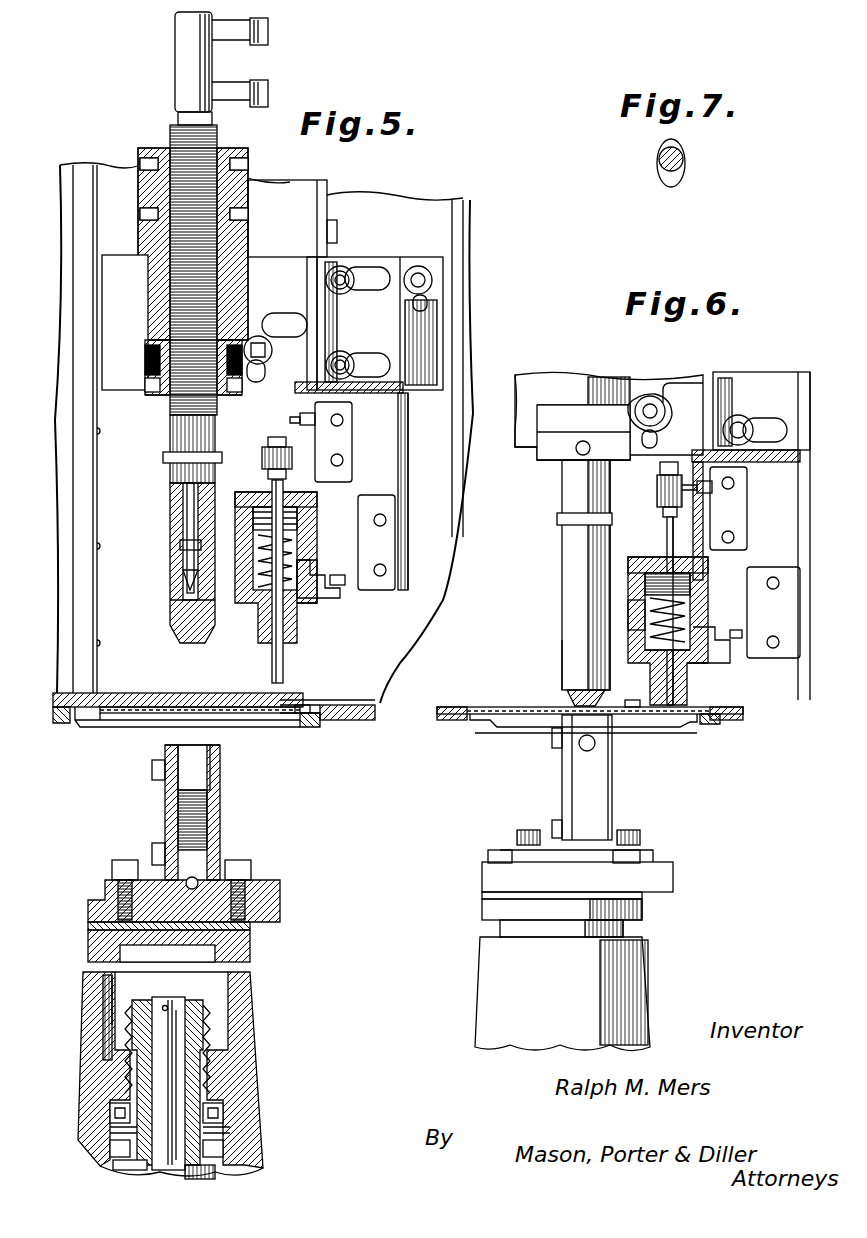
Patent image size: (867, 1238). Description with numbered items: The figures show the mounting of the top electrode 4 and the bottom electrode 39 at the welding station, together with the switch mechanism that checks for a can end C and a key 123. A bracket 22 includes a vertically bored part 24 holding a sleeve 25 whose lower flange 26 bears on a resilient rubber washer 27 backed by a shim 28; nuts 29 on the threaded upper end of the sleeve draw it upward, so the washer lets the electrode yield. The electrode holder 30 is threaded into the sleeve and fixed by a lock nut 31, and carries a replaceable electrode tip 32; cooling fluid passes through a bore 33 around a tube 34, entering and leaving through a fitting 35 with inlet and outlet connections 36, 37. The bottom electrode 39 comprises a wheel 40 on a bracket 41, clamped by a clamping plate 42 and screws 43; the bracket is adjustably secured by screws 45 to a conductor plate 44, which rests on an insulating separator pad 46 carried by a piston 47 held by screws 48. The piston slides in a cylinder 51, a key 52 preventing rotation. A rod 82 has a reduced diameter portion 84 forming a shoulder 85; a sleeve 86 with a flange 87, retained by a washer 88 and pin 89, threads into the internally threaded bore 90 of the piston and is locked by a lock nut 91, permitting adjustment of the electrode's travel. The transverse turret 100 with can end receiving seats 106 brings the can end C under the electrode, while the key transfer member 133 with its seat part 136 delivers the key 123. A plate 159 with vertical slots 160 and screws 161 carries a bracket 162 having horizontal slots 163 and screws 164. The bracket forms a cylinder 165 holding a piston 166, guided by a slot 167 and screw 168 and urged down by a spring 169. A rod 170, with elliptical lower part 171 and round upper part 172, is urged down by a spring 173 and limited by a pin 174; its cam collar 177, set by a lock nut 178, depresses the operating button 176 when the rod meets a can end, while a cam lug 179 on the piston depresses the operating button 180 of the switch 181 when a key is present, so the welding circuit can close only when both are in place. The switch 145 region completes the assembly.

In FIG. 5, the top electrode 4 is at (160, 509).
In FIG. 6, the top electrode 4 is at (552, 612).
In FIG. 5, the bracket 22 is at (115, 395).
In FIG. 6, the bracket 22 is at (527, 442).
In FIG. 5, the vertically bored part 24 is at (245, 265).
In FIG. 6, the vertically bored part 24 is at (550, 385).
In FIG. 5, the sleeve 25 is at (165, 292).
In FIG. 5, the flange 26 is at (165, 385).
In FIG. 6, the flange 26 is at (555, 460).
In FIG. 5, the resilient rubber washer 27 is at (148, 366).
In FIG. 6, the resilient rubber washer 27 is at (555, 420).
In FIG. 5, the shim 28 is at (148, 346).
In FIG. 6, the shim 28 is at (540, 406).
In FIG. 5, the nuts 29 is at (250, 212).
In FIG. 5, the holder 30 is at (175, 470).
In FIG. 6, the holder 30 is at (560, 566).
In FIG. 5, the lock nut 31 is at (165, 155).
In FIG. 5, the replaceable electrode tip 32 is at (172, 608).
In FIG. 6, the replaceable electrode tip 32 is at (575, 668).
In FIG. 5, the bore 33 is at (190, 518).
In FIG. 5, the tube 34 is at (183, 492).
In FIG. 5, the fitting 35 is at (175, 33).
In FIG. 5, the inlet connection 36 is at (268, 33).
In FIG. 5, the outlet connection 37 is at (268, 92).
In FIG. 5, the bottom electrode 39 is at (220, 810).
In FIG. 6, the bottom electrode 39 is at (612, 787).
In FIG. 5, the electrode wheel 40 is at (212, 748).
In FIG. 6, the electrode wheel 40 is at (575, 703).
In FIG. 5, the bracket 41 is at (220, 778).
In FIG. 6, the bracket 41 is at (612, 762).
In FIG. 5, the clamping plate 42 is at (190, 750).
In FIG. 6, the clamping plate 42 is at (567, 779).
In FIG. 5, the screws 43 is at (165, 828).
In FIG. 6, the screws 43 is at (554, 740).
In FIG. 5, the conductor plate 44 is at (282, 912).
In FIG. 6, the conductor plate 44 is at (675, 880).
In FIG. 5, the screws 45 is at (122, 862).
In FIG. 6, the screws 45 is at (530, 832).
In FIG. 5, the insulating separator pad 46 is at (252, 928).
In FIG. 6, the insulating separator pad 46 is at (482, 895).
In FIG. 5, the piston 47 is at (252, 950).
In FIG. 6, the piston 47 is at (482, 905).
In FIG. 6, the screws 48 is at (500, 852).
In FIG. 5, the cylinder 51 is at (255, 1000).
In FIG. 6, the cylinder 51 is at (645, 995).
In FIG. 5, the key 52 is at (105, 1005).
In FIG. 5, the rod 82 is at (235, 1165).
In FIG. 5, the reduced diameter rod portion 84 is at (170, 1045).
In FIG. 5, the shoulder 85 is at (140, 1170).
In FIG. 5, the sleeve 86 is at (205, 1088).
In FIG. 5, the flange 87 is at (225, 1140).
In FIG. 5, the washer 88 is at (110, 980).
In FIG. 5, the pin 89 is at (166, 1005).
In FIG. 5, the internally threaded bore 90 is at (200, 1070).
In FIG. 5, the lock nut 91 is at (225, 1118).
In FIG. 5, the transverse turret 100 is at (320, 722).
In FIG. 6, the transverse turret 100 is at (745, 716).
In FIG. 5, the can end receiving seats 106 is at (60, 722).
In FIG. 6, the can end receiving seats 106 is at (716, 725).
In FIG. 5, the key 123 is at (296, 705).
In FIG. 6, the key 123 is at (628, 700).
In FIG. 5, the key transfer member 133 is at (130, 686).
In FIG. 5, the key engaging seat part 136 is at (180, 700).
In FIG. 5, the plate 145 is at (352, 413).
In FIG. 6, the plate 145 is at (740, 504).
In FIG. 5, the plate 159 is at (430, 350).
In FIG. 6, the plate 159 is at (692, 380).
In FIG. 5, the slots 160 is at (432, 300).
In FIG. 6, the slots 160 is at (649, 439).
In FIG. 5, the screws 161 is at (418, 266).
In FIG. 5, the bracket 162 is at (404, 393).
In FIG. 6, the bracket 162 is at (745, 462).
In FIG. 5, the horizontal slots 163 is at (378, 333).
In FIG. 6, the horizontal slots 163 is at (770, 416).
In FIG. 5, the screws 164 is at (345, 273).
In FIG. 6, the screws 164 is at (742, 412).
In FIG. 5, the cylinder 165 is at (243, 570).
In FIG. 6, the cylinder 165 is at (645, 648).
In FIG. 5, the piston 166 is at (302, 608).
In FIG. 6, the piston 166 is at (692, 662).
In FIG. 5, the slot 167 is at (185, 575).
In FIG. 6, the slot 167 is at (630, 625).
In FIG. 5, the screw 168 is at (185, 545).
In FIG. 6, the screw 168 is at (630, 600).
In FIG. 5, the spring 169 is at (262, 497).
In FIG. 6, the spring 169 is at (635, 575).
In FIG. 5, the rod 170 is at (296, 666).
In FIG. 6, the rod 170 is at (665, 525).
In FIG. 5, the lower rod part 171 is at (275, 658).
In FIG. 6, the lower rod part 171 is at (690, 700).
In FIG. 7, the lower rod part 171 is at (686, 180).
In FIG. 5, the upper rod part 172 is at (300, 497).
In FIG. 6, the upper rod part 172 is at (667, 538).
In FIG. 7, the upper rod part 172 is at (685, 151).
In FIG. 5, the spring 173 is at (298, 545).
In FIG. 6, the spring 173 is at (700, 570).
In FIG. 5, the pin 174 is at (286, 476).
In FIG. 6, the pin 174 is at (662, 506).
In FIG. 5, the operating button 176 is at (298, 415).
In FIG. 6, the operating button 176 is at (712, 487).
In FIG. 5, the cam collar 177 is at (292, 462).
In FIG. 6, the cam collar 177 is at (658, 490).
In FIG. 5, the lock nut 178 is at (290, 453).
In FIG. 6, the lock nut 178 is at (662, 472).
In FIG. 5, the cam lug 179 is at (318, 576).
In FIG. 6, the cam lug 179 is at (720, 645).
In FIG. 5, the operating button 180 is at (340, 576).
In FIG. 6, the operating button 180 is at (736, 630).
In FIG. 5, the switch 181 is at (396, 505).
In FIG. 6, the switch 181 is at (756, 612).
In FIG. 5, the can end C is at (187, 734).
In FIG. 6, the can end C is at (583, 734).